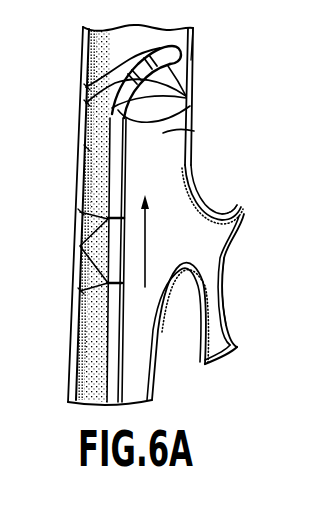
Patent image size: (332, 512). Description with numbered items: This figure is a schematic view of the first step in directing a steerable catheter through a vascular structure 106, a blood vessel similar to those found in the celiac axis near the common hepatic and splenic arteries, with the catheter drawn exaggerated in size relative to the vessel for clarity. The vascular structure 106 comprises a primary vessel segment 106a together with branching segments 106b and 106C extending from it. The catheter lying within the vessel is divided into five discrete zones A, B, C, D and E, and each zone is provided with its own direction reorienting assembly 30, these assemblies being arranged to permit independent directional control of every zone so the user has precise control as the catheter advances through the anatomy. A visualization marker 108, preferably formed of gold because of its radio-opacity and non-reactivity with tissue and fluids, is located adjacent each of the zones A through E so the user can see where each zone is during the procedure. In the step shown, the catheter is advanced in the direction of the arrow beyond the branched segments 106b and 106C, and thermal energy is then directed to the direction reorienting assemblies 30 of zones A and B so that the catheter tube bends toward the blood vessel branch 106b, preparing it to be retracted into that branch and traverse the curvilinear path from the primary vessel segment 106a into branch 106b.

The vascular structure 106 is at (58, 56).
The primary vessel segment 106a is at (197, 56).
The branching segment 106b is at (221, 214).
The branching segment 106C is at (229, 313).
The direction reorienting assembly 30 is at (183, 98).
The visualization marker 108 is at (194, 131).
The zone A is at (86, 87).
The zone B is at (86, 103).
The zone C is at (86, 148).
The zone D is at (80, 212).
The zone E is at (80, 291).